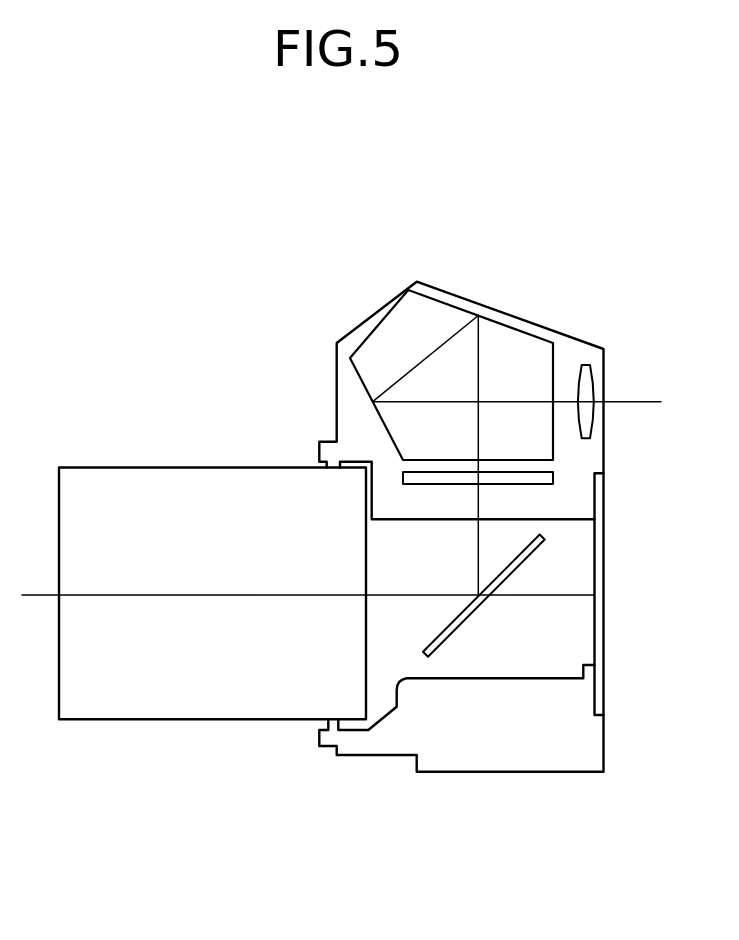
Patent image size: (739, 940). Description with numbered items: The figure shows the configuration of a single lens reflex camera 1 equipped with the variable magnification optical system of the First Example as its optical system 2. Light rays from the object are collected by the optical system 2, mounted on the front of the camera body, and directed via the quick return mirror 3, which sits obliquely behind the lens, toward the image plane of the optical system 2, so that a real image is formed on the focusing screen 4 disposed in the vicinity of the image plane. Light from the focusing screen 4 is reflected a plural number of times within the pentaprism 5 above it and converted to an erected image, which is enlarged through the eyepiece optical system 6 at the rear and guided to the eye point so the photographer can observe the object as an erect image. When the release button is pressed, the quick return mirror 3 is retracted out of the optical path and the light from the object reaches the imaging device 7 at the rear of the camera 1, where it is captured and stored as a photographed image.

The camera 1 is at (185, 283).
The optical system 2 is at (135, 490).
The quick return mirror 3 is at (528, 555).
The focusing screen 4 is at (555, 475).
The pentaprism 5 is at (433, 325).
The eyepiece optical system 6 is at (587, 385).
The imaging device 7 is at (600, 618).